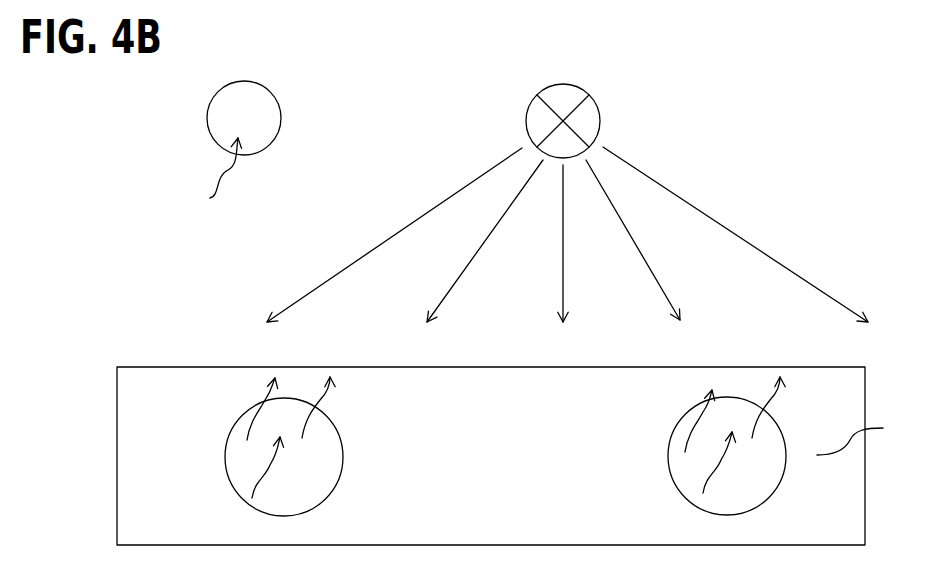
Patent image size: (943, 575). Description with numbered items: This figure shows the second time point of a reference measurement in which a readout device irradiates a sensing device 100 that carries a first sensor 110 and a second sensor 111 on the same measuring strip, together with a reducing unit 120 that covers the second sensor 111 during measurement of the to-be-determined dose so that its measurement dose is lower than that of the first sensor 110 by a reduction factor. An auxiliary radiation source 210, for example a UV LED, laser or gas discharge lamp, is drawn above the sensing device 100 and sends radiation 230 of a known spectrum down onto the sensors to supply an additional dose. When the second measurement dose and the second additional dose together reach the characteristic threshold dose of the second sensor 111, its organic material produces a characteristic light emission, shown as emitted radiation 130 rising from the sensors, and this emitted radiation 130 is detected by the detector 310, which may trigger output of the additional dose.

The sensing device 100 is at (120, 393).
The first sensor 110 is at (230, 457).
The second sensor 111 is at (672, 457).
The reducing unit 120 is at (870, 433).
The emitted radiation 130 is at (222, 186).
The auxiliary radiation source 210 is at (593, 112).
The radiation 230 is at (810, 237).
The detector 310 is at (267, 98).